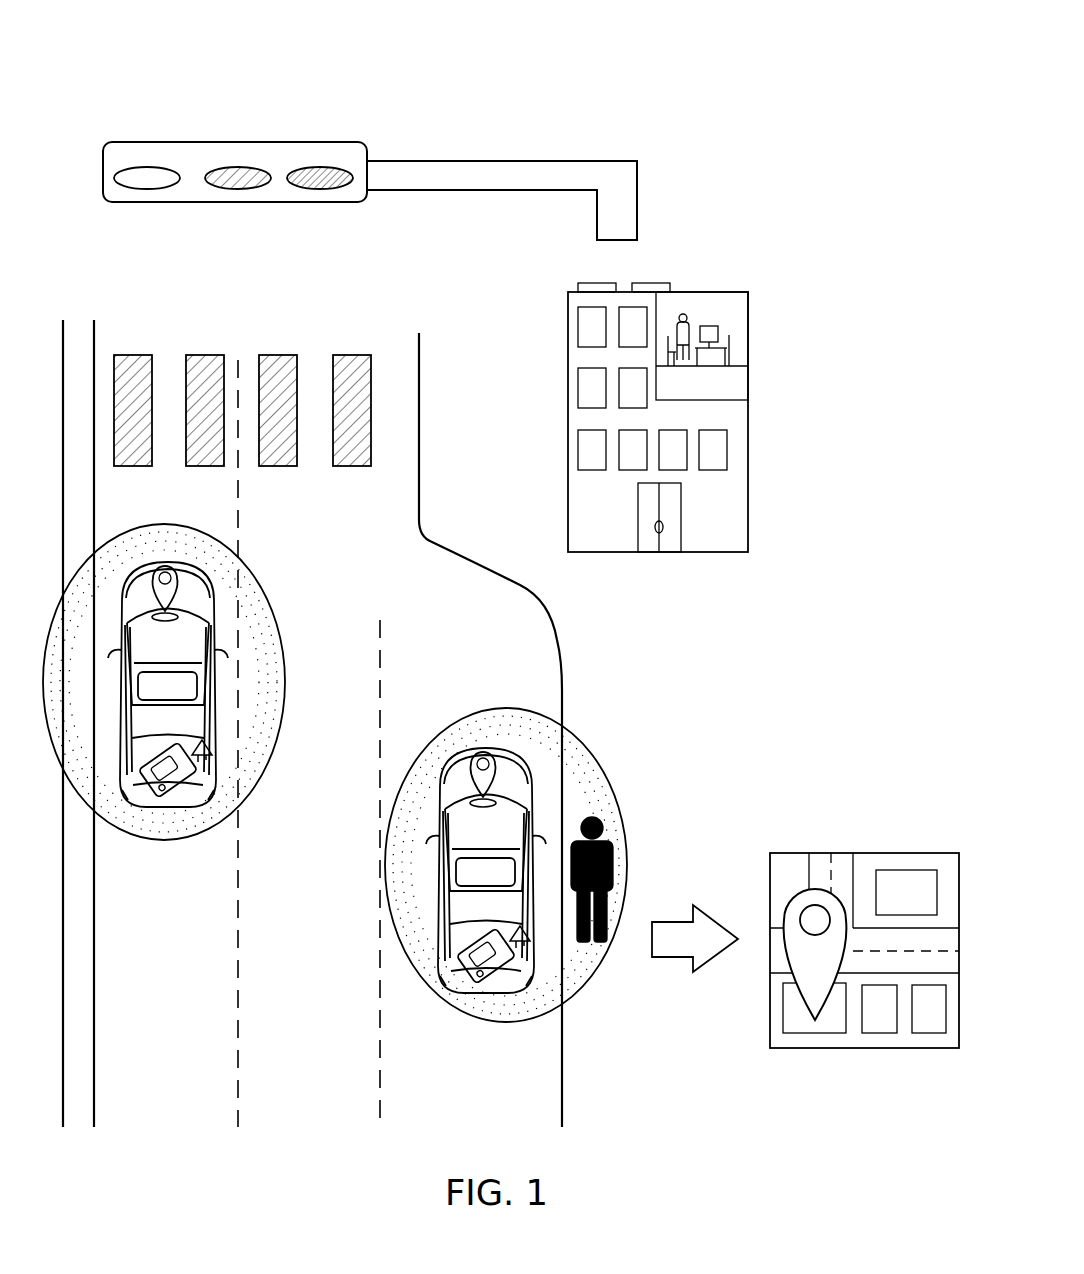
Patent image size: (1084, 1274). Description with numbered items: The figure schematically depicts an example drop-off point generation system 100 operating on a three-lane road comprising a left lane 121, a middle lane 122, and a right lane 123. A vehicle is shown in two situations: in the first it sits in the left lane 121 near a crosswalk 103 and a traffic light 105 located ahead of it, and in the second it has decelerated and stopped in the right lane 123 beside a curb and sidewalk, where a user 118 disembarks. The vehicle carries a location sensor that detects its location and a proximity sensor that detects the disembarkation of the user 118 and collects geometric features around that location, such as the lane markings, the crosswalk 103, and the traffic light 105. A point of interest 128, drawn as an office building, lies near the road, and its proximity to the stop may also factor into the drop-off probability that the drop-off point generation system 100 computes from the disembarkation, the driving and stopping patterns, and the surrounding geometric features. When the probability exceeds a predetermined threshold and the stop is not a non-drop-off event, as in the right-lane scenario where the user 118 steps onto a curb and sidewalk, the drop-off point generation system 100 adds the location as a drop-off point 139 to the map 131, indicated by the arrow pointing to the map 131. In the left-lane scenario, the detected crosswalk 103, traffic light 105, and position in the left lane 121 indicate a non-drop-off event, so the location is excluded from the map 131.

The drop-off point generation system 100 is at (778, 97).
The crosswalk 103 is at (305, 327).
The traffic light 105 is at (278, 142).
The user 118 is at (616, 846).
The left lane 121 is at (176, 1111).
The middle lane 122 is at (331, 1111).
The right lane 123 is at (491, 1111).
The point of interest 128 is at (728, 292).
The map 131 is at (921, 853).
The drop-off point 139 is at (795, 990).